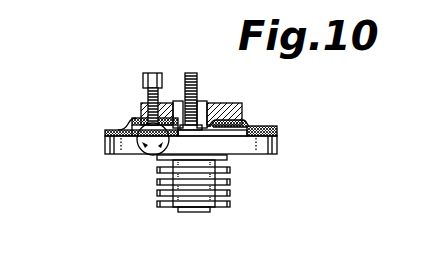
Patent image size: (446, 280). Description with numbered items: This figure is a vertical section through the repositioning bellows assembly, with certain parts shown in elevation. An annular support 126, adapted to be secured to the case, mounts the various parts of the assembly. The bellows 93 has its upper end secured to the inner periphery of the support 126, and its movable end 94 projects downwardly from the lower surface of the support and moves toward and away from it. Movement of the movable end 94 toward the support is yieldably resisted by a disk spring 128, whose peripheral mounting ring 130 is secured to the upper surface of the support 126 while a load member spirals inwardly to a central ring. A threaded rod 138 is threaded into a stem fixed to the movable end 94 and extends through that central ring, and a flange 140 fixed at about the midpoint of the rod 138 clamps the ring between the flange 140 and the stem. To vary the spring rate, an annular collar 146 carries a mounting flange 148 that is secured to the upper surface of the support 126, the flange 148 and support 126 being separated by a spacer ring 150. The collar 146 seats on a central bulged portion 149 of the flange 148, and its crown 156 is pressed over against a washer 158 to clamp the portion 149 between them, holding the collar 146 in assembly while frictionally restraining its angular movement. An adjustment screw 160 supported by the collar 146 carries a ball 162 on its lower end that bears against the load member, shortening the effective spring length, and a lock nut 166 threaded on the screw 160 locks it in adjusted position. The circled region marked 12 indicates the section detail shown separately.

The section line circle 12 is at (153, 139).
The bellows 93 is at (231, 193).
The movable end of bellows 94 is at (159, 207).
The annular support 126 is at (279, 147).
The disk spring 128 is at (201, 134).
The peripheral mounting ring 130 is at (104, 142).
The threaded rod 138 is at (198, 83).
The flange 140 is at (182, 101).
The annular collar 146 is at (228, 103).
The mounting flange 148 is at (106, 128).
The central bulged portion 149 is at (137, 122).
The spacer ring 150 is at (279, 131).
The crown 156 is at (172, 158).
The washer 158 is at (251, 123).
The adjustment screw 160 is at (144, 77).
The ball 162 is at (152, 142).
The lock nut 166 is at (141, 102).